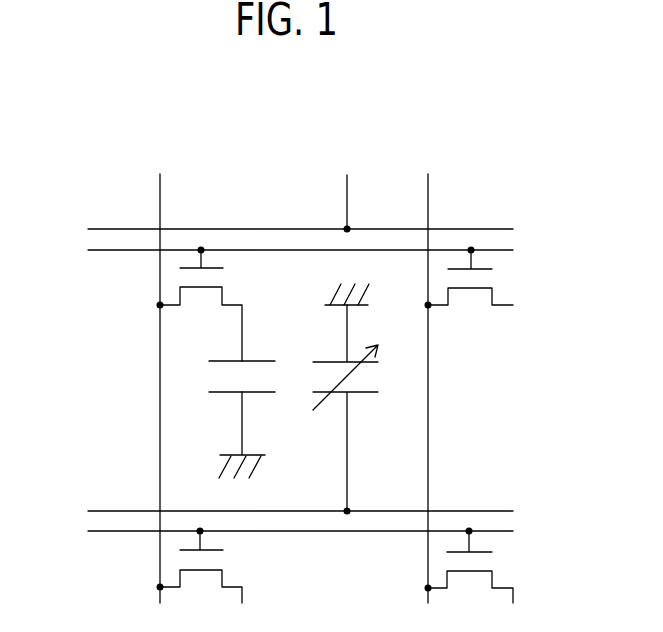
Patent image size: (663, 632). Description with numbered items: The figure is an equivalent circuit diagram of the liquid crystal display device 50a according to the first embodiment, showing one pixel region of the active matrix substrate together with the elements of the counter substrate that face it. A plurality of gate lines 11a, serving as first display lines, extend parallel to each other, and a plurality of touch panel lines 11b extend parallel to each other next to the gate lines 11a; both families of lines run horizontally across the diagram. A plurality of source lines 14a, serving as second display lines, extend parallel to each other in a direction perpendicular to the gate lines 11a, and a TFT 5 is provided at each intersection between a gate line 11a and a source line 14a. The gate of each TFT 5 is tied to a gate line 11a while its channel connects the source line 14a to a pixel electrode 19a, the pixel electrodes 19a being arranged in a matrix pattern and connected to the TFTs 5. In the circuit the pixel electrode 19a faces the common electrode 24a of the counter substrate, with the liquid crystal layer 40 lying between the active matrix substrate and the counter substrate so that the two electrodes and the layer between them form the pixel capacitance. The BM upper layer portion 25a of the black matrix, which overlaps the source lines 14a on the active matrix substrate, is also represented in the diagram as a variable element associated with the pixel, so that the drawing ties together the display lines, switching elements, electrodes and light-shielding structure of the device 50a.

The liquid crystal display device 50a is at (145, 128).
The gate lines 11a is at (105, 251).
The touch panel lines 11b is at (105, 228).
The source lines 14a is at (163, 200).
The TFTs 5 is at (202, 303).
The liquid crystal layer 40 is at (236, 380).
The pixel electrodes 19a is at (258, 361).
The common electrode 24a is at (262, 394).
The BM upper layer portion 25a is at (323, 362).